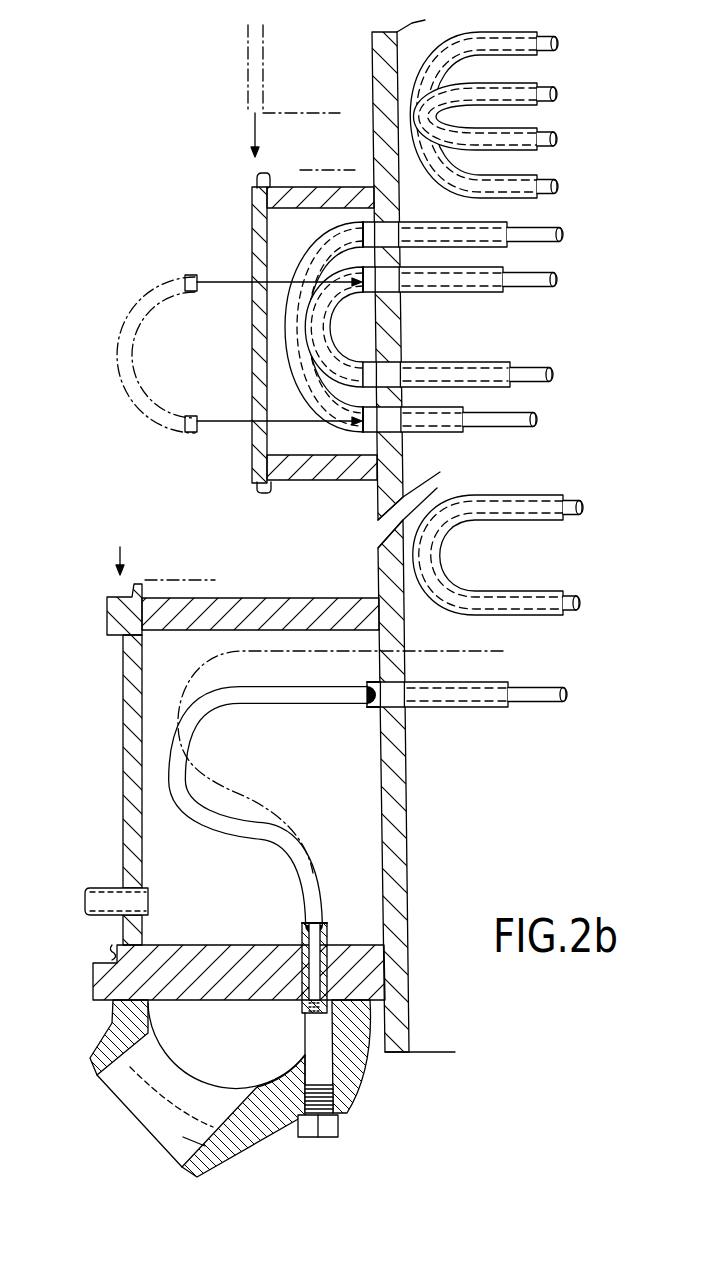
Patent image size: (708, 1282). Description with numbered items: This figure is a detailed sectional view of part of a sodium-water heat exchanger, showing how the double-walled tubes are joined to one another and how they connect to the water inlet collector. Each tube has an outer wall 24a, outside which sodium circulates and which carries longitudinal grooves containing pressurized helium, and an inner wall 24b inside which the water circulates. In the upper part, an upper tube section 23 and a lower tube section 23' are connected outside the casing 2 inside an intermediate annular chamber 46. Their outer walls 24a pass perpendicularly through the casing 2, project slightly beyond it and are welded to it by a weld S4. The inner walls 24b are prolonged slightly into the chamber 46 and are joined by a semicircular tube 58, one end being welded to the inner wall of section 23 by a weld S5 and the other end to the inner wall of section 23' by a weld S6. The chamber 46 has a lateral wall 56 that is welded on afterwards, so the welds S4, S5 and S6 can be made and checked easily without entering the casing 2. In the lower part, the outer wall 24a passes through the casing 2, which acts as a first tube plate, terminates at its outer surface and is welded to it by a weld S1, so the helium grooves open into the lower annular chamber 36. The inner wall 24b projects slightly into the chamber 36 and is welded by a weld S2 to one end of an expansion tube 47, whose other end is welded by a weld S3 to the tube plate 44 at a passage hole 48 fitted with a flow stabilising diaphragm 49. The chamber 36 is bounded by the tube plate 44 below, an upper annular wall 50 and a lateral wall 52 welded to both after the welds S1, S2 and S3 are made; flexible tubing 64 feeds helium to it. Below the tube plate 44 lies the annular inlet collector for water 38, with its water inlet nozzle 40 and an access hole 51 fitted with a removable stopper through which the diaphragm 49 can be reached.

The casing 2 is at (401, 317).
The upper tube section 23 is at (509, 149).
The lower tube section 23' is at (504, 510).
The outer wall 24a is at (493, 292).
The inner wall 24b is at (531, 693).
The lower annular chamber 36 is at (168, 837).
The annular inlet collector for water 38 is at (310, 1043).
The water inlet nozzle 40 is at (222, 1148).
The tube plate 44 is at (220, 956).
The intermediate annular chamber 46 is at (280, 443).
The expansion tube 47 is at (243, 797).
The passage hole 48 is at (318, 1012).
The flow stabilising diaphragm 49 is at (318, 1017).
The upper annular wall 50 is at (263, 604).
The access hole 51 is at (338, 1121).
The lateral wall 52 is at (106, 629).
The lateral wall 56 is at (252, 365).
The semicircular tube 58 is at (330, 245).
The flexible tubing 64 is at (98, 853).
The weld S1 is at (368, 682).
The weld S2 is at (368, 705).
The weld S3 is at (330, 922).
The weld S4 is at (367, 222).
The weld S5 is at (361, 290).
The weld S6 is at (366, 432).